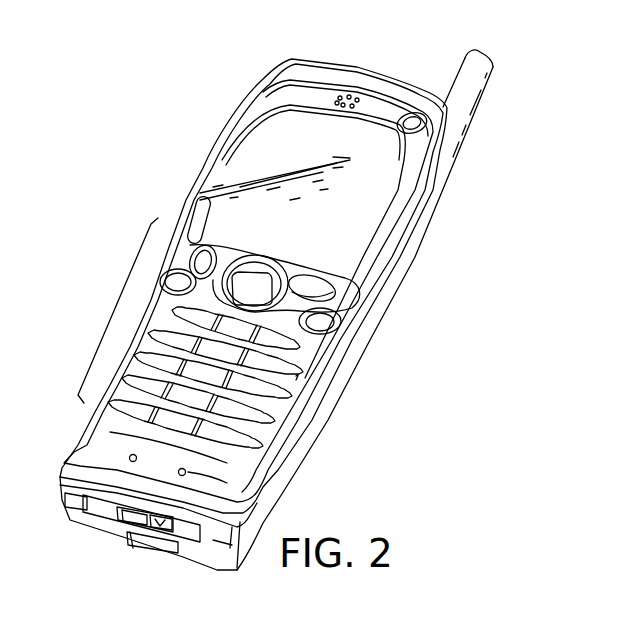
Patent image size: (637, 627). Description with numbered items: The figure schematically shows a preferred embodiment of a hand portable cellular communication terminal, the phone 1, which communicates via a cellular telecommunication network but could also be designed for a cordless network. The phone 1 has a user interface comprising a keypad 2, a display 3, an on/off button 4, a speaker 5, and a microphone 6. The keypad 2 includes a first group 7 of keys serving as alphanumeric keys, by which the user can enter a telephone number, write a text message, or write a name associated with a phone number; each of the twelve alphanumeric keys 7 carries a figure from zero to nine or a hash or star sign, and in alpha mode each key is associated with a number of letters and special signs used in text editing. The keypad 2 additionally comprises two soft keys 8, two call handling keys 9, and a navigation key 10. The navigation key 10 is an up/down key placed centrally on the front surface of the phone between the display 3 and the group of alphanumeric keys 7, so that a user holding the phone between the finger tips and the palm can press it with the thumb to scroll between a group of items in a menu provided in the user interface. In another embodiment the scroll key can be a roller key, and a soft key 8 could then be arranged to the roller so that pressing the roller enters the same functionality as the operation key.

The phone 1 is at (439, 240).
The keypad 2 is at (113, 312).
The display 3 is at (340, 217).
The on/off button 4 is at (445, 167).
The speaker 5 is at (357, 98).
The microphone 6 is at (253, 510).
The first group of keys 7 is at (283, 408).
The soft keys 8 is at (200, 193).
The call handling keys 9 is at (296, 380).
The navigation key 10 is at (269, 284).